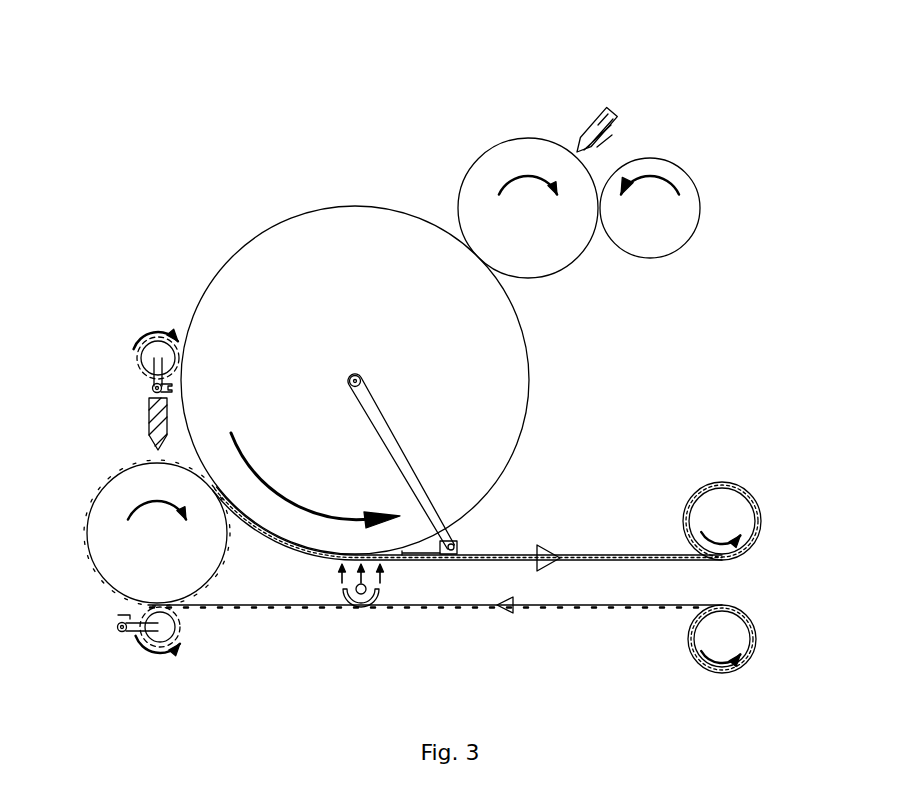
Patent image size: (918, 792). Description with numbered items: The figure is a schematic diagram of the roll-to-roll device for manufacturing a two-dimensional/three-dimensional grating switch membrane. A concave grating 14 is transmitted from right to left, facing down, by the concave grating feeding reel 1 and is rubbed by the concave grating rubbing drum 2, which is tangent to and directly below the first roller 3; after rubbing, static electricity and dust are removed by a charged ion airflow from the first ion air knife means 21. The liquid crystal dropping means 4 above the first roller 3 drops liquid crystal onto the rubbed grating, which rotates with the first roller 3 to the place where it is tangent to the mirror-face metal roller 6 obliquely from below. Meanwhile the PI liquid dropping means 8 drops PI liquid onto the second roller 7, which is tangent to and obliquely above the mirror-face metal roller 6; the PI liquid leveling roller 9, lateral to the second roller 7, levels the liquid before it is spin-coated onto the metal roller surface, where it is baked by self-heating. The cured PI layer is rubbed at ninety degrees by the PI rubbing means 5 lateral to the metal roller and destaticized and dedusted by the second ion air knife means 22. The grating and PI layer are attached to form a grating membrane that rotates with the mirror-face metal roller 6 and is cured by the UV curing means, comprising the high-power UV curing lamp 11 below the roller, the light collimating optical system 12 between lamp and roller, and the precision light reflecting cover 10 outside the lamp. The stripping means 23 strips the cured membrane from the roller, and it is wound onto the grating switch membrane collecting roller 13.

The concave grating feeding reel 1 is at (752, 658).
The concave grating rubbing drum 2 is at (138, 647).
The first roller 3 is at (118, 500).
The liquid crystal dropping means 4 is at (148, 428).
The PI rubbing means 5 is at (142, 343).
The mirror-face metal roller 6 is at (227, 260).
The second roller 7 is at (520, 138).
The PI liquid dropping means 8 is at (603, 113).
The PI liquid leveling roller 9 is at (683, 160).
The precision light reflecting cover 10 is at (363, 598).
The high-power UV curing lamp 11 is at (367, 595).
The light collimating optical system 12 is at (382, 583).
The 2D/3D grating switch membrane collecting roller 13 is at (755, 540).
The concave grating 14 is at (232, 605).
The first ion air knife means 21 is at (122, 626).
The second ion air knife means 22 is at (153, 385).
The stripping means 23 is at (455, 545).